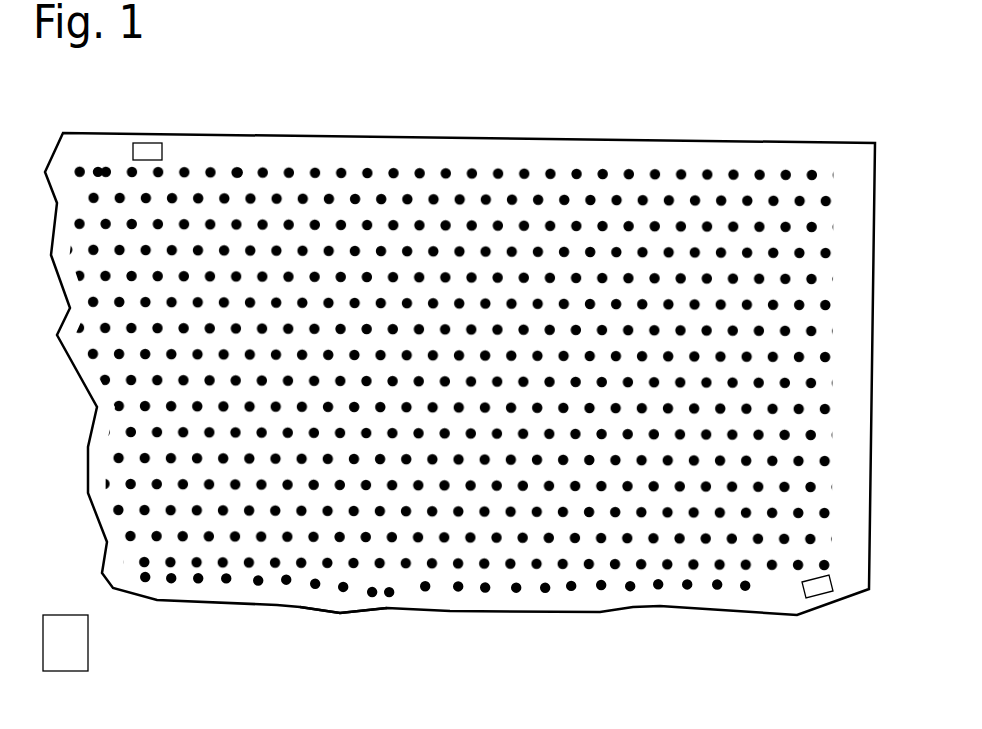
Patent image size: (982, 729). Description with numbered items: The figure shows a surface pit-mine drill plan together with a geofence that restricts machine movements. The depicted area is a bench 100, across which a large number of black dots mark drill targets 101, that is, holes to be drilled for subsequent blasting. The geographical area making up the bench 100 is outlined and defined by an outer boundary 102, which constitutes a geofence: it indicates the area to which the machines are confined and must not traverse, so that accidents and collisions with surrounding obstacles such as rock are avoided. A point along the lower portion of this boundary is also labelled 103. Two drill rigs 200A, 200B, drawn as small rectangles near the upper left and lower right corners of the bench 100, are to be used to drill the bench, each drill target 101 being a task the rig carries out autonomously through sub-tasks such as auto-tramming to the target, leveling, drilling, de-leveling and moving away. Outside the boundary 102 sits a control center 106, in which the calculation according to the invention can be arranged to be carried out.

The bench 100 is at (469, 368).
The drill targets 101 is at (239, 172).
The outer boundary 102 is at (490, 137).
The bottom edge region 103 is at (332, 626).
The control center 106 is at (88, 642).
The drill rig 200A is at (823, 598).
The drill rig 200B is at (133, 152).